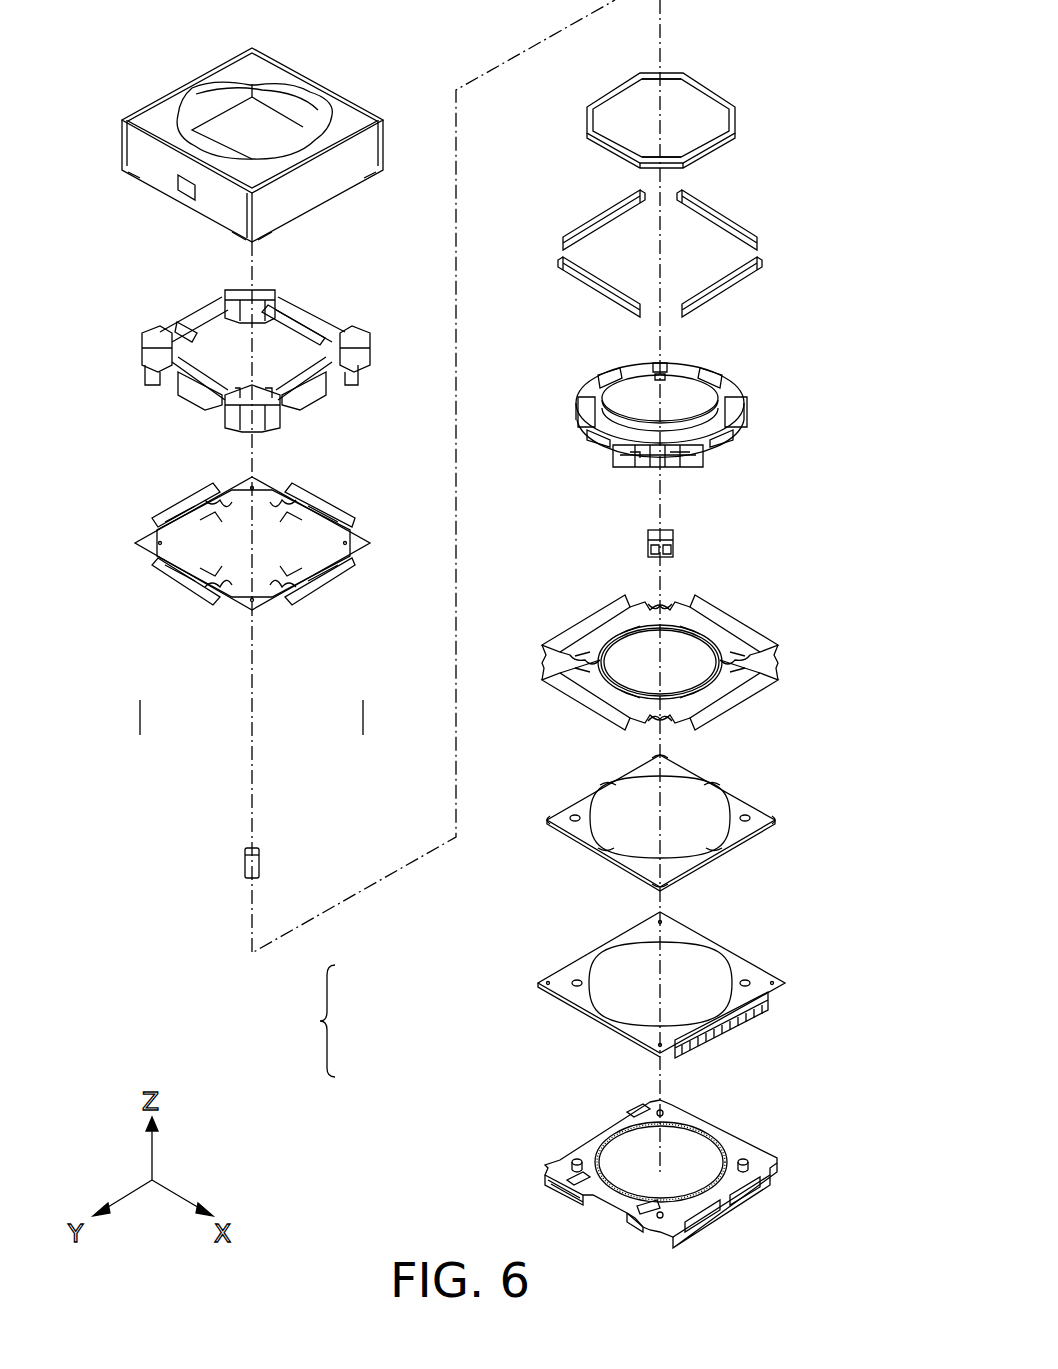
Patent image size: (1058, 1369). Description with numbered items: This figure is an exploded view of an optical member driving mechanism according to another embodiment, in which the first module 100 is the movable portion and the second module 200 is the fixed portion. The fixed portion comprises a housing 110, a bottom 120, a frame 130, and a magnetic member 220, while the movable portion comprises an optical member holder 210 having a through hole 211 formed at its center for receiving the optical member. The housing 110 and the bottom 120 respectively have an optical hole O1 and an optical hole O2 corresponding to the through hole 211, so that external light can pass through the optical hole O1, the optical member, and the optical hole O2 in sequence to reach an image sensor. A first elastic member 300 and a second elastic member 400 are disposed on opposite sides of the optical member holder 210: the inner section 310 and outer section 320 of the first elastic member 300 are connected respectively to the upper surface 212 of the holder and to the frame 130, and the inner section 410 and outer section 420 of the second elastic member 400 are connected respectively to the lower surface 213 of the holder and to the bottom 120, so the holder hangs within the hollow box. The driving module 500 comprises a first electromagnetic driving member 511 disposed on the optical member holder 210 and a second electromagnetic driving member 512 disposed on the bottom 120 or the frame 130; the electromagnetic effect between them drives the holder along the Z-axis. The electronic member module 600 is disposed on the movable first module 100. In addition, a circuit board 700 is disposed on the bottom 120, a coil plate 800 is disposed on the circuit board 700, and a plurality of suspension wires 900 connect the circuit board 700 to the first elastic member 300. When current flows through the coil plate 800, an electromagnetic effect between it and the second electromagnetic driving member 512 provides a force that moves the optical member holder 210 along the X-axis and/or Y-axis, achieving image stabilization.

The first module 100 is at (698, 364).
The housing 110 is at (132, 152).
The bottom 120 is at (565, 1160).
The frame 130 is at (180, 325).
The second module 200 is at (329, 1022).
The optical member holder 210 is at (657, 415).
The through hole 211 is at (705, 394).
The upper surface 212 is at (632, 372).
The lower surface 213 is at (706, 455).
The magnetic member 220 is at (245, 866).
The first elastic member 300 is at (240, 530).
The inner section 310 is at (165, 568).
The outer section 320 is at (152, 530).
The second elastic member 400 is at (673, 658).
The inner section 410 is at (615, 682).
The outer section 420 is at (578, 630).
The driving module 500 is at (730, 188).
The first electromagnetic driving member 511 is at (722, 90).
The second electromagnetic driving member 512 is at (722, 210).
The electronic member module 600 is at (648, 530).
The circuit board 700 is at (748, 968).
The coil plate 800 is at (750, 800).
The suspension wires 900 is at (140, 716).
The optical hole O1 is at (302, 100).
The optical hole O2 is at (695, 1150).